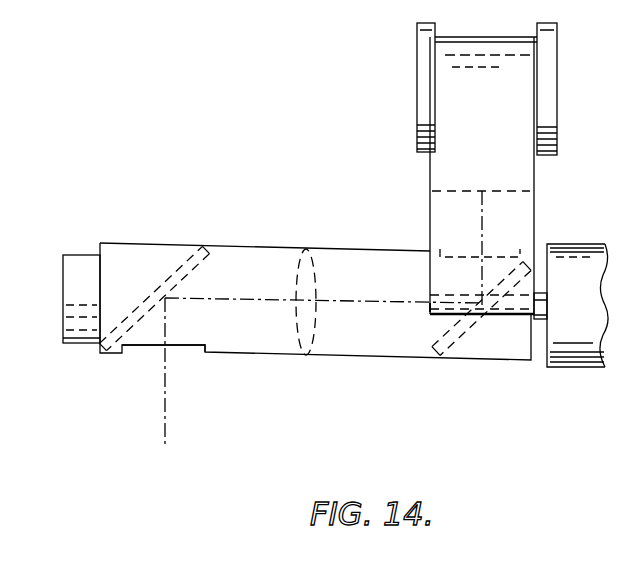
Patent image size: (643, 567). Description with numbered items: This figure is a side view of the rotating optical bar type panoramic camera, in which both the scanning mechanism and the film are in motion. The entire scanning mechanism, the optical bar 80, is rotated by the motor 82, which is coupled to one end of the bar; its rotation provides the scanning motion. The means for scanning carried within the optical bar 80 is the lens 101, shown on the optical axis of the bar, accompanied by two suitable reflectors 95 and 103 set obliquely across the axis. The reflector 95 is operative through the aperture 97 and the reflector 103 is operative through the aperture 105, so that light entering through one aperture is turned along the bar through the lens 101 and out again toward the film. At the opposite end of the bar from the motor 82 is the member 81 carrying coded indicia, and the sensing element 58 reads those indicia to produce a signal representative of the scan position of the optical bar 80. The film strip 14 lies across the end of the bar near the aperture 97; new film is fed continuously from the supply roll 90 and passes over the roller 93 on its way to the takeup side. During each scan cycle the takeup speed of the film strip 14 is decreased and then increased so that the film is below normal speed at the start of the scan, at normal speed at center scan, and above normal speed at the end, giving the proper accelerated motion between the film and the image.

The film strip 14 is at (509, 191).
The supply roll 90 is at (547, 62).
The aperture 97 is at (473, 257).
The optical bar 80 is at (273, 249).
The aperture 105 is at (197, 351).
The member 81 is at (85, 256).
The sensing element 58 is at (62, 312).
The reflector 103 is at (182, 270).
The lens 101 is at (312, 282).
The roller 93 is at (430, 308).
The reflector 95 is at (471, 331).
The motor 82 is at (587, 284).